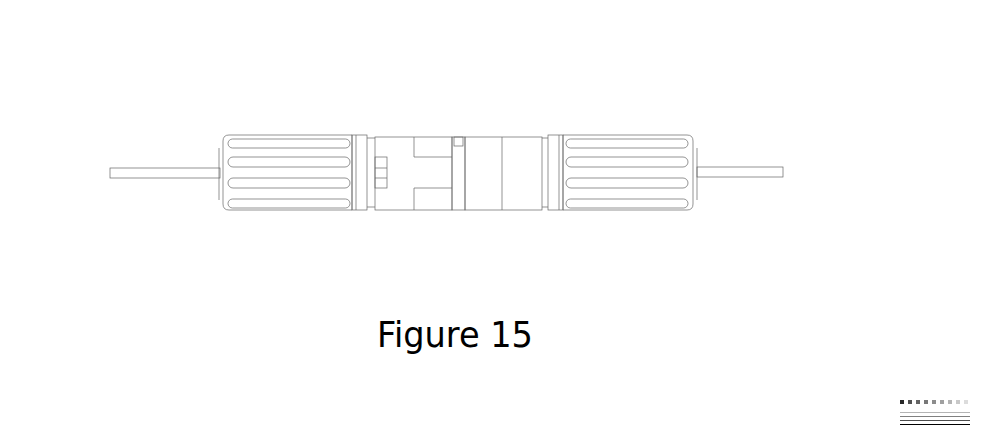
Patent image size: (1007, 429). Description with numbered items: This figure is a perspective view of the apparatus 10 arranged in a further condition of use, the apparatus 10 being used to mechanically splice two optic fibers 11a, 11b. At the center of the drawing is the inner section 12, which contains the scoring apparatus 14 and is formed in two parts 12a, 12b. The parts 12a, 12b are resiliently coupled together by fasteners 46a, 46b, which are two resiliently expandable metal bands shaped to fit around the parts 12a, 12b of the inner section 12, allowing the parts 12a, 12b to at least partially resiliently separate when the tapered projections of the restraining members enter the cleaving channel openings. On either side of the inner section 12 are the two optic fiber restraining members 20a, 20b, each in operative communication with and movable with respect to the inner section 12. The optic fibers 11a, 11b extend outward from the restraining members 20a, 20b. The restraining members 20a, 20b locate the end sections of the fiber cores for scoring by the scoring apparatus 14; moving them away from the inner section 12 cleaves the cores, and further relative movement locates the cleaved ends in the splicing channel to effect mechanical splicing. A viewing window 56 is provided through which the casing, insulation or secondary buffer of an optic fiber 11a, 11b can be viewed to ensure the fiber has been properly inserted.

The apparatus 10 is at (607, 138).
The optic fiber 11a is at (140, 168).
The optic fiber 11b is at (767, 167).
The inner section 12 is at (542, 224).
The part of inner section 12a is at (408, 148).
The part of inner section 12b is at (507, 198).
The scoring apparatus 14 is at (460, 130).
The optic fiber restraining member 20a is at (270, 208).
The optic fiber restraining member 20b is at (647, 208).
The fastener 46a is at (438, 147).
The fastener 46b is at (483, 158).
The viewing window 56 is at (381, 167).